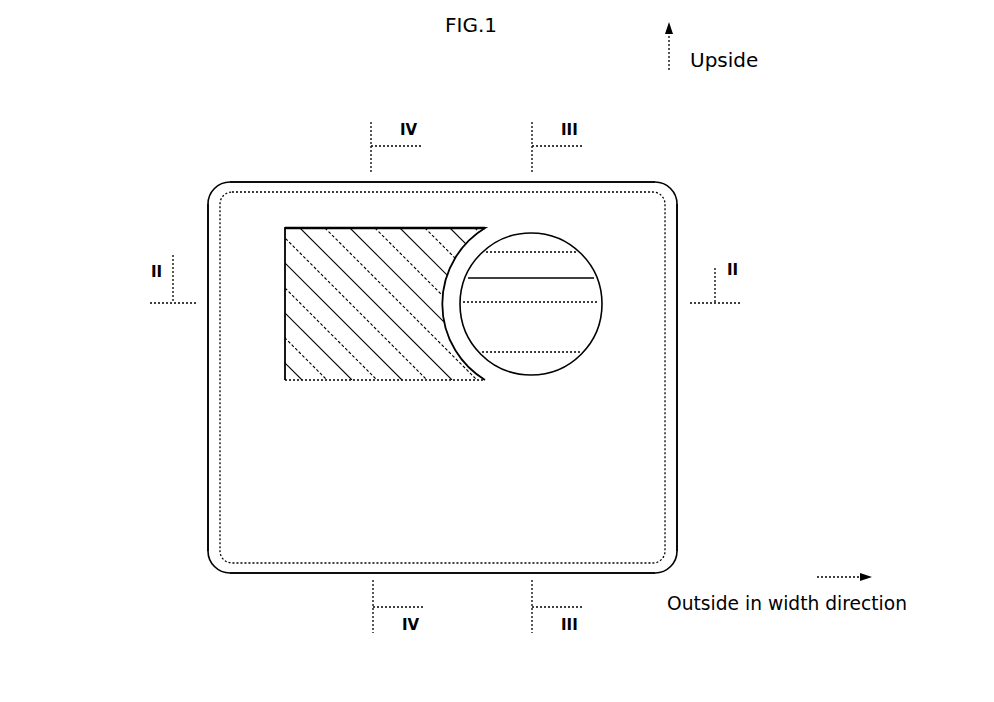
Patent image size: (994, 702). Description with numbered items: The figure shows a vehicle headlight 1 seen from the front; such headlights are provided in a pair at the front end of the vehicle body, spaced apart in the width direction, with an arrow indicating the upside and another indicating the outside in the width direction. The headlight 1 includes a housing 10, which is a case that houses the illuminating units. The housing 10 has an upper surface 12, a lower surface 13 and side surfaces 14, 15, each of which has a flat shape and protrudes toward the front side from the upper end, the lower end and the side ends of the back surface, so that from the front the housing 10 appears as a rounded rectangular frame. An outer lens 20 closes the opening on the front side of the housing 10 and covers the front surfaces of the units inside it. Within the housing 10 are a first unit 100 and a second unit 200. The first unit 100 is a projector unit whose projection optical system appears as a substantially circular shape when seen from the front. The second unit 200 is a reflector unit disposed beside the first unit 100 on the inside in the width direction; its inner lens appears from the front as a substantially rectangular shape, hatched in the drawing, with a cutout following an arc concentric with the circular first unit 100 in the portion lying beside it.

The headlight 1 is at (205, 143).
The housing 10 is at (193, 175).
The upper surface 12 is at (292, 183).
The lower surface 13 is at (312, 573).
The side surface 14 is at (213, 462).
The side surface 15 is at (677, 440).
The outer lens 20 is at (243, 362).
The second unit 200 is at (286, 374).
The first unit 100 is at (541, 326).